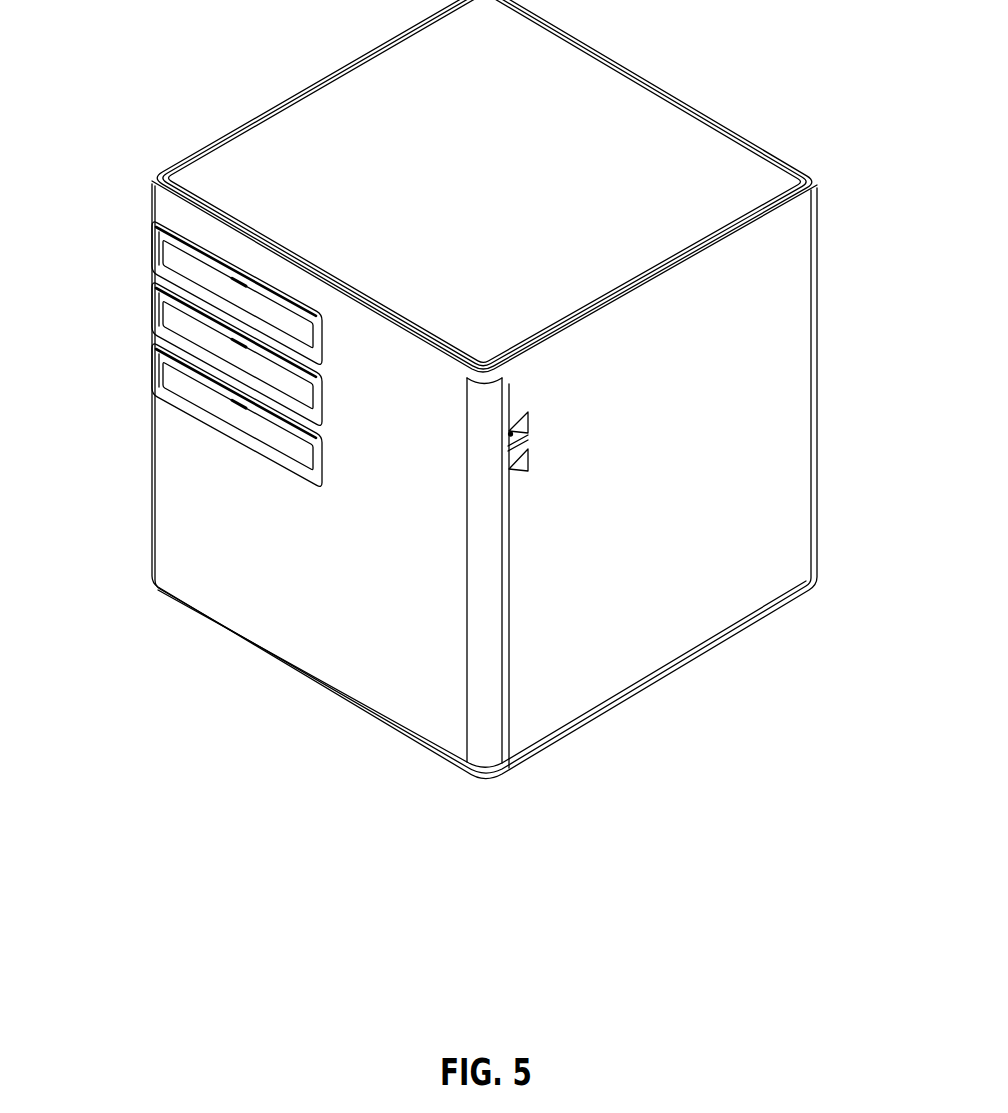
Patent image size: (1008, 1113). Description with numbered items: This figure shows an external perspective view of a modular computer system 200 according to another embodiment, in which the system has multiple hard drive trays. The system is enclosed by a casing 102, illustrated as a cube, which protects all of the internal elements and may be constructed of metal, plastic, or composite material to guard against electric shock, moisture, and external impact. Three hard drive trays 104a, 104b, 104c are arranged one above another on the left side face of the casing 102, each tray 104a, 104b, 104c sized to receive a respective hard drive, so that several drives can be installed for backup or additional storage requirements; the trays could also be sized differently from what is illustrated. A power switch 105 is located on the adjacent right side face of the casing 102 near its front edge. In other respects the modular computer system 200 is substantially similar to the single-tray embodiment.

The modular computer system 200 is at (712, 50).
The casing 102 is at (283, 128).
The tray 104a is at (152, 233).
The tray 104b is at (152, 291).
The tray 104c is at (150, 351).
The power switch 105 is at (560, 436).